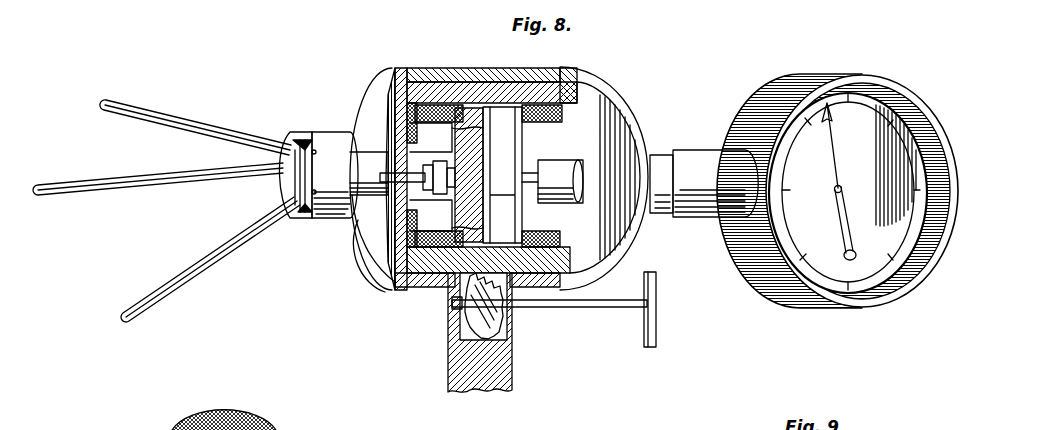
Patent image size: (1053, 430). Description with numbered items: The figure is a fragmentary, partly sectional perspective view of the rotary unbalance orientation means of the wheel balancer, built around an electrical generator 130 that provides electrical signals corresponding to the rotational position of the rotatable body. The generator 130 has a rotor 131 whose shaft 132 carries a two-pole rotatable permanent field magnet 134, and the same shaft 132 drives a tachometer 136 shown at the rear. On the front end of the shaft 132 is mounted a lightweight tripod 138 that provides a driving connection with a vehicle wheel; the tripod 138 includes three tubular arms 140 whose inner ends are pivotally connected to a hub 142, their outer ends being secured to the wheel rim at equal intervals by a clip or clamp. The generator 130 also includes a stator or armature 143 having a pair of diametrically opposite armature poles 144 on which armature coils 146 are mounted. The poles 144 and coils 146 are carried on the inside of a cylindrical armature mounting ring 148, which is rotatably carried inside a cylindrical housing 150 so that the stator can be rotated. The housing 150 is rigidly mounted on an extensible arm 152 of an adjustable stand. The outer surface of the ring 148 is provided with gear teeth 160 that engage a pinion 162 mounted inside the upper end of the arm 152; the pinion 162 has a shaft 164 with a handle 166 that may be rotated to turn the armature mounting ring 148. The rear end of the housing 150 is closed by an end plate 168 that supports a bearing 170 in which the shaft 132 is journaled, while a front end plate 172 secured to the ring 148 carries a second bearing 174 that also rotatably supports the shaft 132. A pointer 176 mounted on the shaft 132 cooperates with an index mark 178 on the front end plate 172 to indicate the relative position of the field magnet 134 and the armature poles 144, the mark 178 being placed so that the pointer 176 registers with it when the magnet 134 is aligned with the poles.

The electrical generator 130 is at (452, 66).
The rotor 131 is at (347, 140).
The shaft 132 is at (459, 193).
The two-pole rotatable permanent field magnet 134 is at (507, 212).
The tachometer 136 is at (959, 192).
The lightweight tripod 138 is at (212, 268).
The tubular arms 140 is at (165, 121).
The hub 142 is at (268, 193).
The stator or armature 143 is at (562, 67).
The armature poles 144 is at (500, 117).
The armature coils 146 is at (600, 118).
The armature mounting ring 148 is at (433, 90).
The cylindrical housing 150 is at (397, 288).
The extensible arm 152 is at (512, 355).
The gear teeth 160 is at (566, 262).
The pinion 162 is at (465, 394).
The shaft 164 is at (560, 307).
The handle 166 is at (656, 290).
The end plate 168 is at (585, 175).
The bearing 170 is at (650, 152).
The front end plate 172 is at (348, 302).
The second bearing 174 is at (352, 225).
The pointer 176 is at (357, 150).
The index mark 178 is at (390, 80).